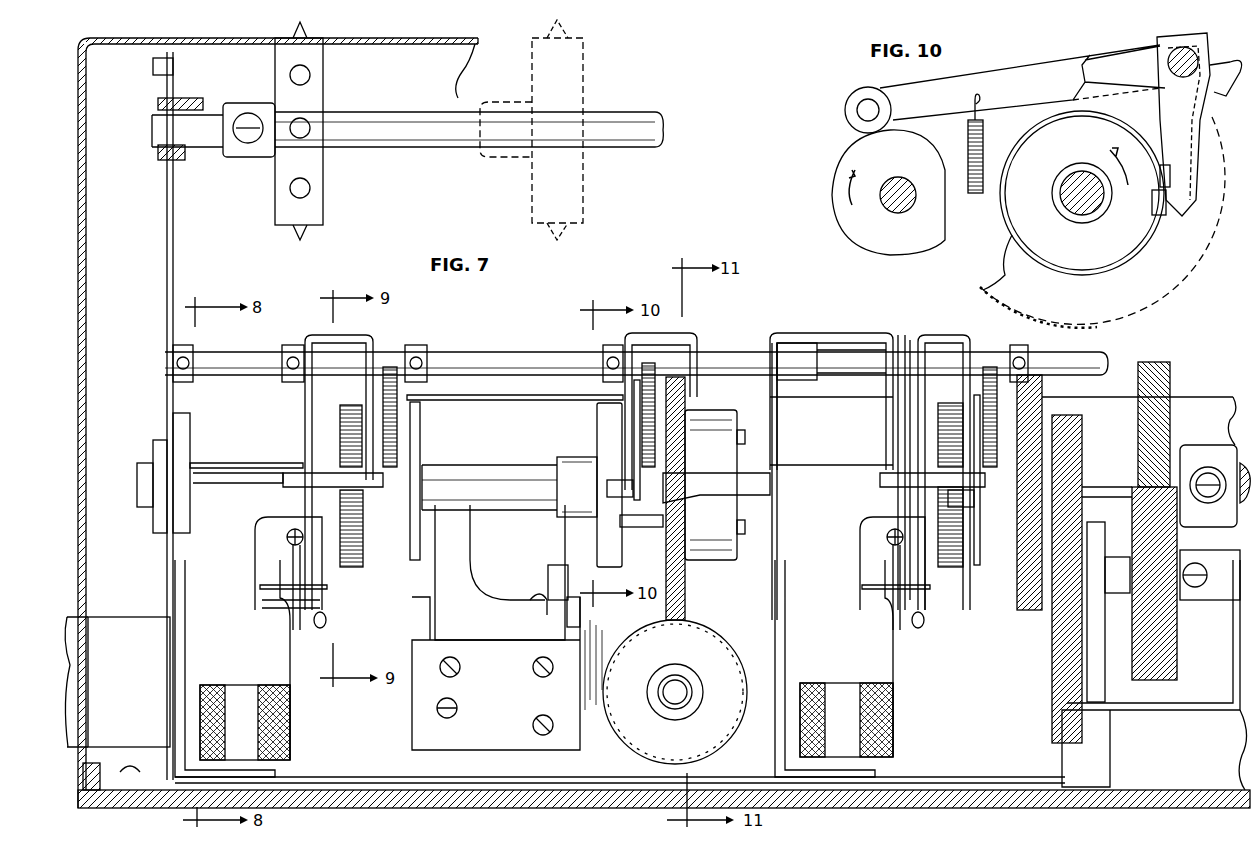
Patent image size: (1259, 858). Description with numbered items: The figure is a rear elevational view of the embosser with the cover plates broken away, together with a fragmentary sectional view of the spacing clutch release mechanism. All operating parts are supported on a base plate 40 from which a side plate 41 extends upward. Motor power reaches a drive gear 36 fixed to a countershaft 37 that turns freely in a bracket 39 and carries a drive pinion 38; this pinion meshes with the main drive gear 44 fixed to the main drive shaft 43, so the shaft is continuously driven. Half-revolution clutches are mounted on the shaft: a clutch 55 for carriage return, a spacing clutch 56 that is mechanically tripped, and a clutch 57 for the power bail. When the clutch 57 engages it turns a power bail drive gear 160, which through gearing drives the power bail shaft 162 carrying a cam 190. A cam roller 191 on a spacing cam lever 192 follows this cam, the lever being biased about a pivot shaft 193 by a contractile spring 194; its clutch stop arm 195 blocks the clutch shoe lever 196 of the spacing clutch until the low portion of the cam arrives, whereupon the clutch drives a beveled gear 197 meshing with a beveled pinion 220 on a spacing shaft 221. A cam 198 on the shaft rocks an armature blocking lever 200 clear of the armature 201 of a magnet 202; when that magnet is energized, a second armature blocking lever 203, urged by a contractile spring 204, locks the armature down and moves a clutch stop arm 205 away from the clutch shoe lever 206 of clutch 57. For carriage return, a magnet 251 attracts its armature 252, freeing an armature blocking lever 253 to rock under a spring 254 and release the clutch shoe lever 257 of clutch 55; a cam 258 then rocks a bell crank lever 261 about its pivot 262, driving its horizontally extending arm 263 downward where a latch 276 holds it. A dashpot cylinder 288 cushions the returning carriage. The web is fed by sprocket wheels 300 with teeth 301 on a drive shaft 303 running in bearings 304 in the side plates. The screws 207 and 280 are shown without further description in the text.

In FIG. 7, the drive gear 36 is at (1052, 678).
In FIG. 7, the countershaft 37 is at (1125, 603).
In FIG. 7, the drive pinion 38 is at (1177, 641).
In FIG. 7, the bracket 39 is at (1233, 668).
In FIG. 7, the base plate 40 is at (365, 797).
In FIG. 7, the side plate 41 is at (167, 275).
In FIG. 7, the main drive shaft 43 is at (493, 465).
In FIG. 10, the main drive shaft 43 is at (1066, 180).
In FIG. 7, the main drive gear 44 is at (1170, 362).
In FIG. 7, the clutch 55 is at (340, 422).
In FIG. 7, the spacing clutch 56 is at (597, 415).
In FIG. 10, the spacing clutch 56 is at (1108, 255).
In FIG. 7, the clutch 57 is at (938, 415).
In FIG. 7, the power bail drive gear 160 is at (1022, 610).
In FIG. 10, the power bail shaft 162 is at (916, 198).
In FIG. 10, the cam 190 is at (853, 150).
In FIG. 10, the cam roller 191 is at (850, 100).
In FIG. 7, the spacing cam lever 192 is at (687, 332).
In FIG. 10, the spacing cam lever 192 is at (1046, 66).
In FIG. 7, the pivot shaft 193 is at (512, 352).
In FIG. 10, the pivot shaft 193 is at (1205, 40).
In FIG. 10, the contractile spring 194 is at (968, 127).
In FIG. 7, the clutch stop arm 195 is at (634, 445).
In FIG. 10, the clutch stop arm 195 is at (1170, 210).
In FIG. 7, the clutch shoe lever 196 is at (612, 497).
In FIG. 10, the clutch shoe lever 196 is at (1162, 220).
In FIG. 7, the gear 197 is at (685, 600).
In FIG. 10, the gear 197 is at (995, 278).
In FIG. 7, the cam 198 is at (735, 560).
In FIG. 7, the armature blocking lever 200 is at (827, 333).
In FIG. 7, the armature 201 is at (930, 590).
In FIG. 7, the magnet 202 is at (893, 740).
In FIG. 7, the armature blocking lever 203 is at (930, 335).
In FIG. 7, the contractile spring 204 is at (920, 630).
In FIG. 7, the clutch stop arm 205 is at (974, 435).
In FIG. 7, the clutch shoe lever 206 is at (950, 500).
In FIG. 7, the screw 207 is at (887, 533).
In FIG. 7, the beveled pinion 220 is at (633, 748).
In FIG. 7, the spacing shaft 221 is at (672, 709).
In FIG. 7, the magnet 251 is at (290, 710).
In FIG. 7, the armature 252 is at (327, 587).
In FIG. 7, the armature blocking lever 253 is at (323, 606).
In FIG. 7, the spring 254 is at (322, 628).
In FIG. 7, the clutch shoe lever 257 is at (373, 343).
In FIG. 7, the cam 258 is at (420, 411).
In FIG. 7, the bell crank lever 261 is at (435, 566).
In FIG. 7, the pivot 262 is at (580, 614).
In FIG. 7, the horizontally extending arm 263 is at (548, 588).
In FIG. 7, the latch 276 is at (532, 608).
In FIG. 7, the screw 280 is at (287, 537).
In FIG. 7, the dashpot cylinder 288 is at (140, 620).
In FIG. 7, the sprocket wheels 300 is at (275, 178).
In FIG. 7, the teeth 301 is at (306, 234).
In FIG. 7, the drive shaft 303 is at (412, 112).
In FIG. 7, the bearings 304 is at (160, 152).